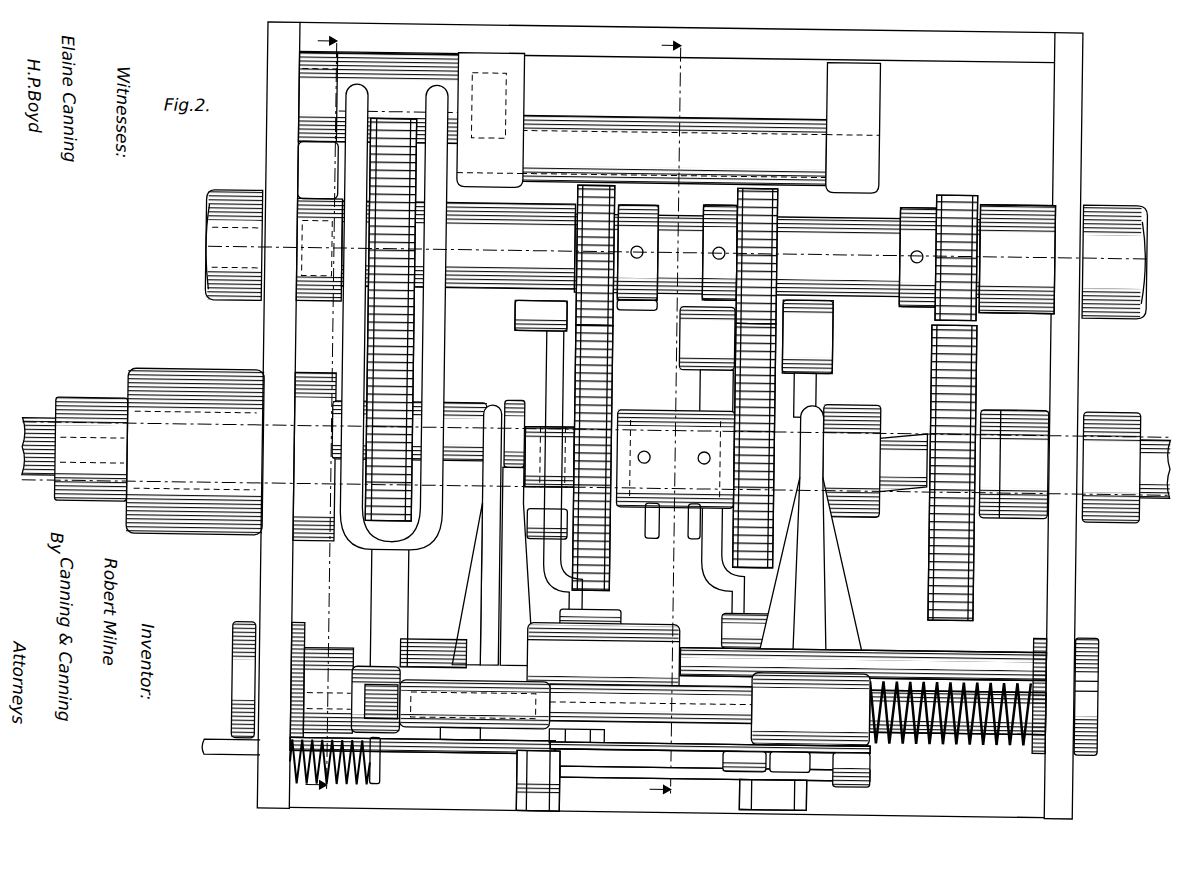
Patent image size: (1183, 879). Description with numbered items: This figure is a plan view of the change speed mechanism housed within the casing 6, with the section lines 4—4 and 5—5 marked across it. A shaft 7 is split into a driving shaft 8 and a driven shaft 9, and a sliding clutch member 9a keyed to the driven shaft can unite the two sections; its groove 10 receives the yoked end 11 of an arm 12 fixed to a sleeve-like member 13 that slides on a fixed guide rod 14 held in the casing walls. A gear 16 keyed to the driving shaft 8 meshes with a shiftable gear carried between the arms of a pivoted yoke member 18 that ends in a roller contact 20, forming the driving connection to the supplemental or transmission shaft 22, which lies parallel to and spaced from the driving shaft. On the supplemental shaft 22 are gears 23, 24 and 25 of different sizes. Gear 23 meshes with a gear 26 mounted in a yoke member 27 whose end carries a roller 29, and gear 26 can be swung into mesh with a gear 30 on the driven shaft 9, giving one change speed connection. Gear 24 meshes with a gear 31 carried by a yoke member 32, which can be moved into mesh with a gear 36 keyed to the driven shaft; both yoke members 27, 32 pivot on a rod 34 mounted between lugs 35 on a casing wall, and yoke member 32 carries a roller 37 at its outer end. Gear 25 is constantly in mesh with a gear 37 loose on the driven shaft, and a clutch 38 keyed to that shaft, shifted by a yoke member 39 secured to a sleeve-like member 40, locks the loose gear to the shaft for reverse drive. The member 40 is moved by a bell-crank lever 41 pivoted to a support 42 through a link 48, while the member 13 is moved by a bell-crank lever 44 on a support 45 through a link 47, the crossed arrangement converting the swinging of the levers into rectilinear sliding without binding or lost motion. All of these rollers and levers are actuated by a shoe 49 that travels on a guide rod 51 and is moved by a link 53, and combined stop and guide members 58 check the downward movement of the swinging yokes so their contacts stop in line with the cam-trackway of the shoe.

The section line 4— 4 is at (334, 412).
The section line 5— 5 is at (668, 417).
The casing 6 is at (1070, 348).
The shaft 7 is at (47, 482).
The driving shaft 8 is at (42, 423).
The driven shaft 9 is at (895, 431).
The clutch member 9a is at (472, 397).
The groove 10 is at (505, 401).
The yoked end 11 is at (498, 465).
The arm 12 is at (504, 575).
The sleeve-like member 13 is at (474, 704).
The fixed guide rod 14 is at (492, 683).
The gear 16 is at (392, 510).
The yoke member 18 is at (442, 344).
The contact 20 is at (384, 678).
The supplemental shaft 22 is at (862, 287).
The gear 23 is at (578, 230).
The gear 24 is at (793, 238).
The gear 25 is at (964, 190).
The gear 26 is at (522, 320).
The yoke member 27 is at (560, 358).
The roller 29 is at (633, 607).
The gear 30 is at (600, 396).
The gear 31 is at (842, 342).
The yoke member 32 is at (807, 391).
The rod 34 is at (719, 136).
The lugs 35 is at (521, 102).
The gear 36 is at (745, 550).
The gear 37 is at (966, 591).
The clutch 38 is at (851, 461).
The yoke member 39 is at (822, 565).
The sleeve-like member 40 is at (810, 728).
The bell-crank lever 41 is at (478, 755).
The support 42 is at (550, 786).
The bell-crank lever 44 is at (895, 754).
The support 45 is at (810, 786).
The link 47 is at (672, 745).
The link 48 is at (700, 775).
The shoe 49 is at (540, 656).
The guide rod 51 is at (914, 657).
The link 53 is at (238, 759).
The combined stop and guide members 58 is at (614, 534).